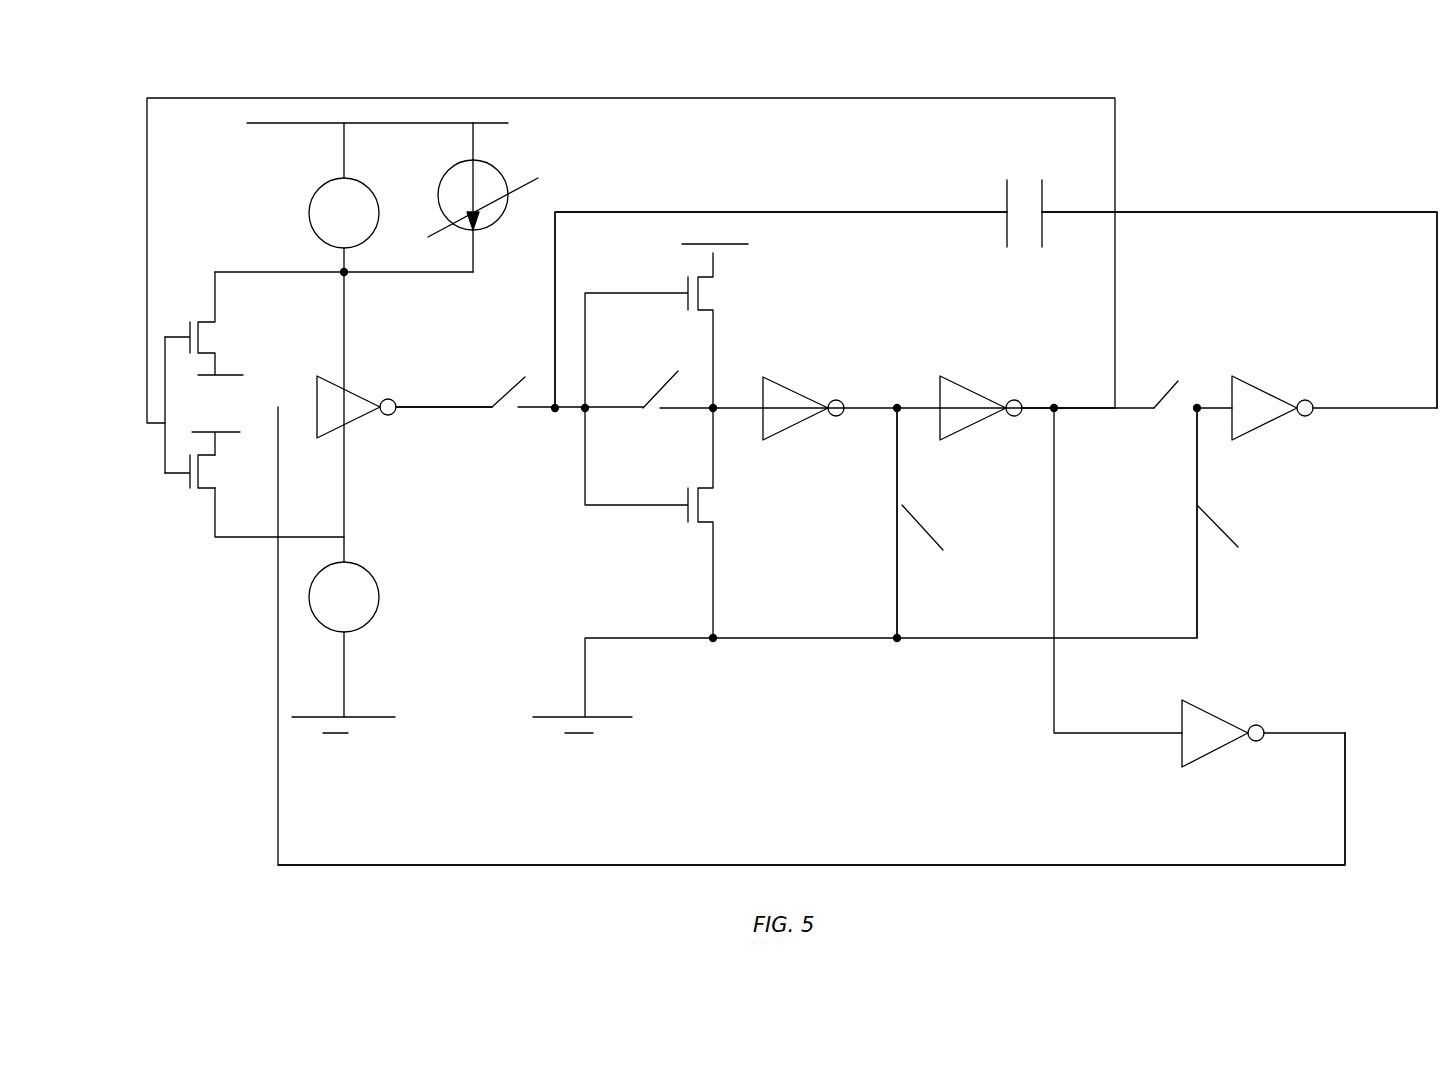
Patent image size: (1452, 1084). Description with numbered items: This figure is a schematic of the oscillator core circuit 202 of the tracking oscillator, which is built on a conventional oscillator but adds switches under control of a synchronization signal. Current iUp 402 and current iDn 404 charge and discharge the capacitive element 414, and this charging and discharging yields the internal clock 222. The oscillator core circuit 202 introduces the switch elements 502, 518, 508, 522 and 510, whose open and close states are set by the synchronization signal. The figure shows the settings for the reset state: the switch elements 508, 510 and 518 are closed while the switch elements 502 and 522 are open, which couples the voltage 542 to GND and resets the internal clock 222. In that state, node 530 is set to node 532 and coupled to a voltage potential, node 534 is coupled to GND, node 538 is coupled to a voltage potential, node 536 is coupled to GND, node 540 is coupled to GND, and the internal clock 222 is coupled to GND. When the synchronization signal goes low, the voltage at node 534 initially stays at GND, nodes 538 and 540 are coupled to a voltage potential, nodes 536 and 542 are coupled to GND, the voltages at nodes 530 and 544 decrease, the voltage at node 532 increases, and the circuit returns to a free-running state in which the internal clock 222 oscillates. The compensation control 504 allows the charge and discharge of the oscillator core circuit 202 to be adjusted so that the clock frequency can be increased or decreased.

The oscillator core circuit 202 is at (1258, 180).
The internal clock 222 is at (1348, 785).
The current iUp 402 is at (400, 174).
The current iDn 404 is at (385, 585).
The capacitive element 414 is at (1075, 183).
The switch element 502 is at (520, 380).
The compensation control 504 is at (500, 178).
The switch element 508 is at (925, 520).
The switch element 510 is at (1218, 520).
The switch element 518 is at (670, 375).
The switch element 522 is at (1175, 378).
The node voltage 530 is at (861, 207).
The node voltage 532 is at (742, 393).
The node voltage 534 is at (880, 401).
The node voltage 536 is at (297, 404).
The node voltage 538 is at (1042, 401).
The node voltage 540 is at (1203, 393).
The voltage 542 is at (1334, 390).
The node voltage 544 is at (440, 406).